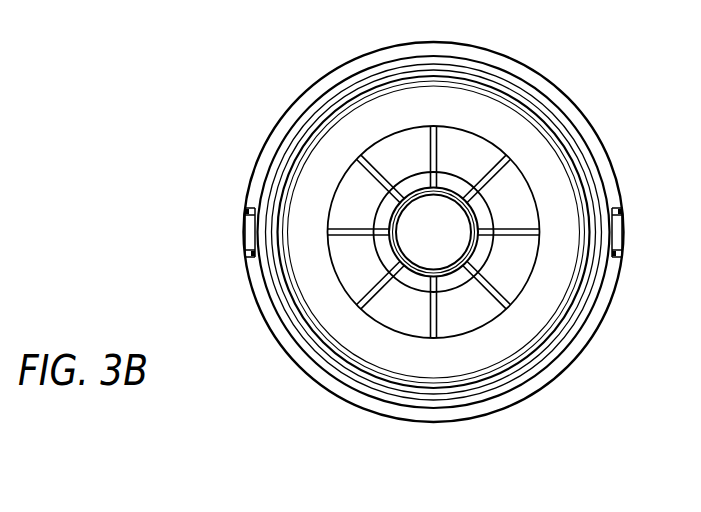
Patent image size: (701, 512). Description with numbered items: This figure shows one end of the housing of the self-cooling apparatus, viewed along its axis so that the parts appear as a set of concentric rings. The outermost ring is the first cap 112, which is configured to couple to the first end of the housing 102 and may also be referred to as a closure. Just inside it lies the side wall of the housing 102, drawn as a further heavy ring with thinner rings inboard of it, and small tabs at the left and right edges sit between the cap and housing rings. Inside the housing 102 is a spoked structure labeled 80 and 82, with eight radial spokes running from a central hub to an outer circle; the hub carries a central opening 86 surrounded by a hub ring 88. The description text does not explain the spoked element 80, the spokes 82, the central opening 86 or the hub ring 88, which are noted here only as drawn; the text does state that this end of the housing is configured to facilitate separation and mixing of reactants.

The first cap 112 is at (330, 72).
The housing 102 is at (577, 133).
The wheel body 80 is at (320, 167).
The spokes 82 is at (440, 152).
The central hub opening 86 is at (467, 212).
The hub ring 88 is at (409, 296).